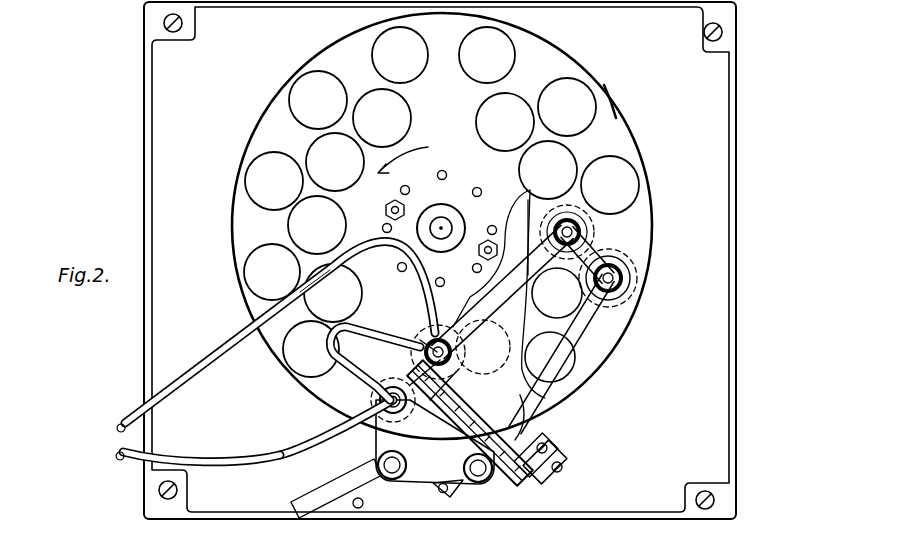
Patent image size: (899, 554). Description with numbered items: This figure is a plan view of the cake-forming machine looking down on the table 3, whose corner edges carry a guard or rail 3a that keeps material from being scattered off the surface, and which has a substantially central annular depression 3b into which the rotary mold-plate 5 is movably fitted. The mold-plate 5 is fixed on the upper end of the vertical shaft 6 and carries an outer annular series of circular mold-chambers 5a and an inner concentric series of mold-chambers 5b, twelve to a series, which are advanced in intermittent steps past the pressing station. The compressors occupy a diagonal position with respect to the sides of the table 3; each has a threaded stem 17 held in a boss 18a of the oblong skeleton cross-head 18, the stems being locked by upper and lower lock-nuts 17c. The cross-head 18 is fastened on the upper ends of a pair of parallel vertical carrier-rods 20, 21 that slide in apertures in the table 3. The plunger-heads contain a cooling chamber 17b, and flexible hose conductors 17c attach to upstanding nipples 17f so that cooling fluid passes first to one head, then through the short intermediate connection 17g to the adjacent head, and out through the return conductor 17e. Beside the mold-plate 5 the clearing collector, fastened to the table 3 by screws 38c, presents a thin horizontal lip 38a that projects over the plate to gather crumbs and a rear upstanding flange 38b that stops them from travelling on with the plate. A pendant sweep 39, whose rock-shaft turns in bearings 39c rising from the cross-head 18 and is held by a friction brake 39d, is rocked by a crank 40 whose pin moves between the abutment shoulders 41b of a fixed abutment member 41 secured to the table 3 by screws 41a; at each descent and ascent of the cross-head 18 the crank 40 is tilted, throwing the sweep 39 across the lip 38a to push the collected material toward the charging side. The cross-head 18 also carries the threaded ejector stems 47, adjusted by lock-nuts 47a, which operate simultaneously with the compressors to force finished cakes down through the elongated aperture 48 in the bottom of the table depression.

The table 3 is at (717, 100).
The guard or rail 3a is at (731, 142).
The central recess or annular depression 3b is at (605, 101).
The mold-plate or disk 5 is at (552, 68).
The outer series of mold-chambers 5a is at (468, 43).
The inner series of mold-chambers 5b is at (471, 114).
The shaft 6 is at (443, 224).
The threaded stem 17 is at (445, 338).
The chamber 17b is at (410, 368).
The conductors or hose 17c is at (470, 357).
The return conductor 17e is at (130, 417).
The nipples 17f is at (380, 403).
The intermediate connection 17g is at (317, 367).
The cross-head 18 is at (500, 395).
The bosses 18a is at (413, 343).
The carrier-rod 20 is at (392, 480).
The carrier-rod 21 is at (480, 483).
The horizontal lip 38a is at (507, 350).
The rear flange 38b is at (557, 293).
The screws 38c is at (358, 508).
The sweep 39 is at (441, 424).
The bearings 39c is at (520, 437).
The friction brake 39d is at (540, 432).
The crank 40 is at (562, 455).
The abutment member 41 is at (546, 480).
The screws 41a is at (565, 466).
The abutment shoulders 41b is at (528, 472).
The ejector stem 47 is at (615, 272).
The lock-nuts 47a is at (623, 284).
The elongated aperture 48 is at (612, 299).